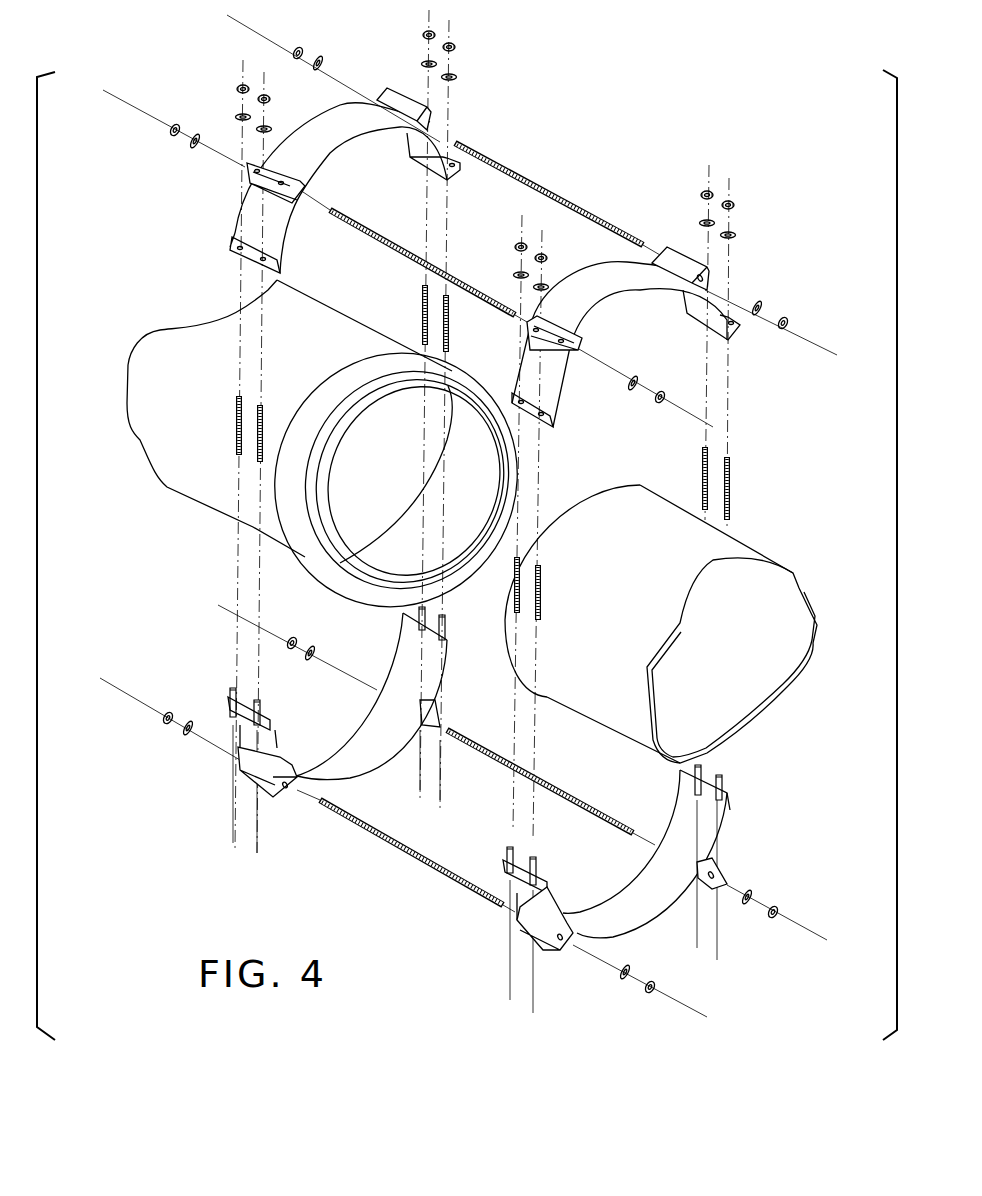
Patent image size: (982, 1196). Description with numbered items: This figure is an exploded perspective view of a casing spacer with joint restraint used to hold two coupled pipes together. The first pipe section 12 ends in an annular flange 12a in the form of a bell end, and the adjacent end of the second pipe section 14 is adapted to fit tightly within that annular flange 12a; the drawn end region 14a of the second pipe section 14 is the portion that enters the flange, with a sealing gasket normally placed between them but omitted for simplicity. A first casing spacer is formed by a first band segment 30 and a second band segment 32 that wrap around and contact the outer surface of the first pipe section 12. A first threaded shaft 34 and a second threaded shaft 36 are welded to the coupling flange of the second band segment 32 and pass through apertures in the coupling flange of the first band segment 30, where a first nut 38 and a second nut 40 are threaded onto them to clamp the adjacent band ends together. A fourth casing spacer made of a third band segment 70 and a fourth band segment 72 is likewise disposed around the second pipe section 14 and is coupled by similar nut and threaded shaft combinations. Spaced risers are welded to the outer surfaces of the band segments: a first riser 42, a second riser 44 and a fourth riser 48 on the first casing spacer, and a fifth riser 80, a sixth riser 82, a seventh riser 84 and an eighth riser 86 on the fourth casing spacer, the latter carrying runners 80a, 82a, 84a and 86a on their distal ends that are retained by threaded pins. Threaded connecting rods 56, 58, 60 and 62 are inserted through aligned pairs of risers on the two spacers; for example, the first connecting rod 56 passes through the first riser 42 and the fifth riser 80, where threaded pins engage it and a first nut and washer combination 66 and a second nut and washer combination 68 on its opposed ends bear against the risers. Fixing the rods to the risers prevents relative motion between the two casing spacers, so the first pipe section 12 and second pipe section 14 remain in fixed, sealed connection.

The first pipe section 12 is at (322, 351).
The annular flange 12a is at (368, 425).
The second pipe section 14 is at (620, 587).
The pipe end 14a is at (597, 493).
The first band segment 30 is at (333, 161).
The second band segment 32 is at (403, 749).
The first threaded shaft 34 is at (236, 420).
The second threaded shaft 36 is at (262, 413).
The first nut 38 is at (238, 85).
The second nut 40 is at (268, 99).
The first riser 42 is at (245, 178).
The second riser 44 is at (240, 760).
The fourth riser 48 is at (392, 105).
The first connecting rod 56 is at (386, 242).
The connecting rod 58 is at (382, 845).
The connecting rod 60 is at (527, 173).
The connecting rod 62 is at (566, 795).
The first nut and washer combination 66 is at (168, 143).
The second nut and washer combination 68 is at (660, 405).
The third band segment 70 is at (608, 314).
The fourth band segment 72 is at (676, 902).
The fifth riser 80 is at (583, 343).
The runner 80a is at (550, 305).
The sixth riser 82 is at (530, 920).
The runner 82a is at (540, 952).
The seventh riser 84 is at (710, 870).
The runner 84a is at (717, 890).
The eighth riser 86 is at (663, 242).
The runner 86a is at (678, 245).